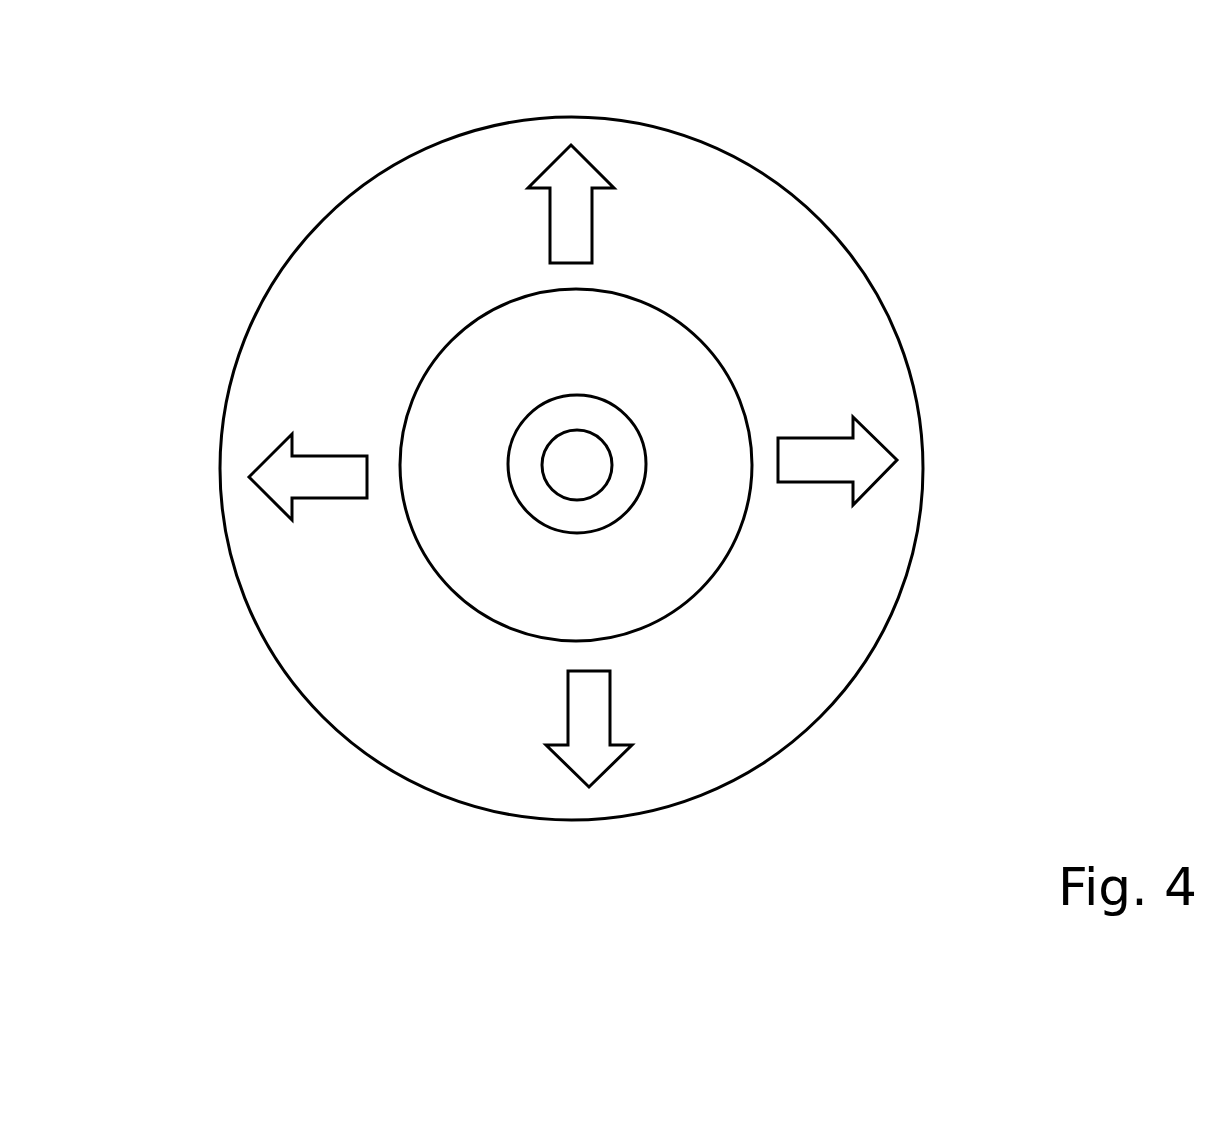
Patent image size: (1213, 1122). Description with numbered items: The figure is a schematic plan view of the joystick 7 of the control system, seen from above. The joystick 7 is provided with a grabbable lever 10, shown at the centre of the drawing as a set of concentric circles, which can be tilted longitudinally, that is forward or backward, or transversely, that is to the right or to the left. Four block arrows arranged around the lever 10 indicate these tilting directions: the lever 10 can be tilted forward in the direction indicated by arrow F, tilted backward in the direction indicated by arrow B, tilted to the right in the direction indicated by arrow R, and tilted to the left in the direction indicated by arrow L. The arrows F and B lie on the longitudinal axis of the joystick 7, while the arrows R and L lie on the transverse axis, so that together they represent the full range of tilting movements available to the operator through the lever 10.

The joystick 7 is at (373, 128).
The lever 10 is at (588, 457).
The arrow F is at (573, 190).
The arrow B is at (588, 738).
The arrow L is at (315, 472).
The arrow R is at (840, 465).